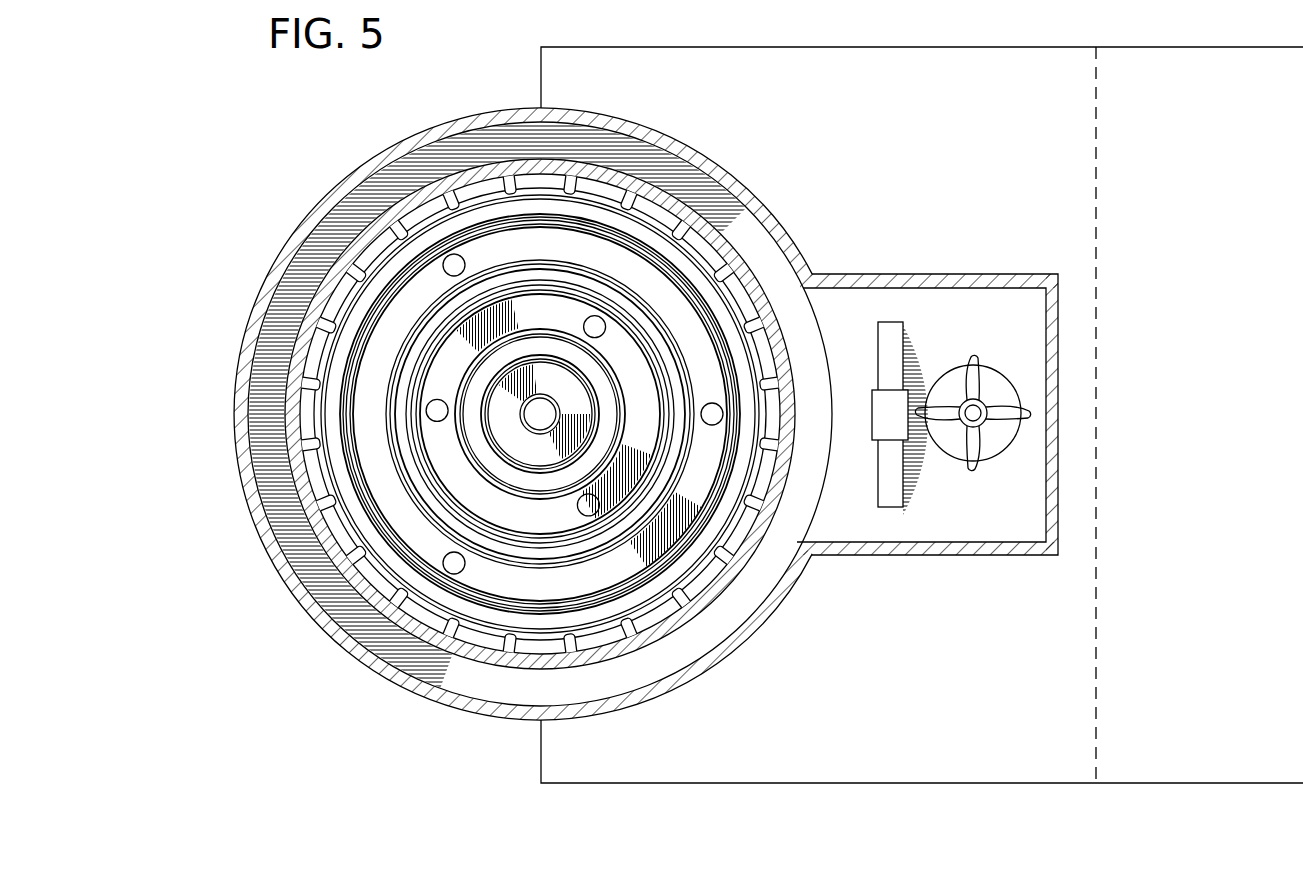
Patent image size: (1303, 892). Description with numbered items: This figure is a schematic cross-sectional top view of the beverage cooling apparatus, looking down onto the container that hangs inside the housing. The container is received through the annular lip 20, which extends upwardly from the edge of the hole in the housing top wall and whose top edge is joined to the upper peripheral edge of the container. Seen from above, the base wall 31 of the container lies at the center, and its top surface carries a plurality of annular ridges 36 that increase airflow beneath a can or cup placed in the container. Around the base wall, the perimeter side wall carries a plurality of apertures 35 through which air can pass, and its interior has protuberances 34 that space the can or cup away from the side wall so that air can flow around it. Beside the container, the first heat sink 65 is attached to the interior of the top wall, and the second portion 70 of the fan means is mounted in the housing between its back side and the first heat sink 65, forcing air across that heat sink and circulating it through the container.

The annular lip 20 is at (258, 322).
The base wall 31 is at (495, 580).
The protuberances 34 is at (293, 583).
The apertures 35 is at (292, 413).
The annular ridges 36 is at (458, 262).
The first heat sink 65 is at (885, 470).
The second portion of the fan means 70 is at (985, 457).